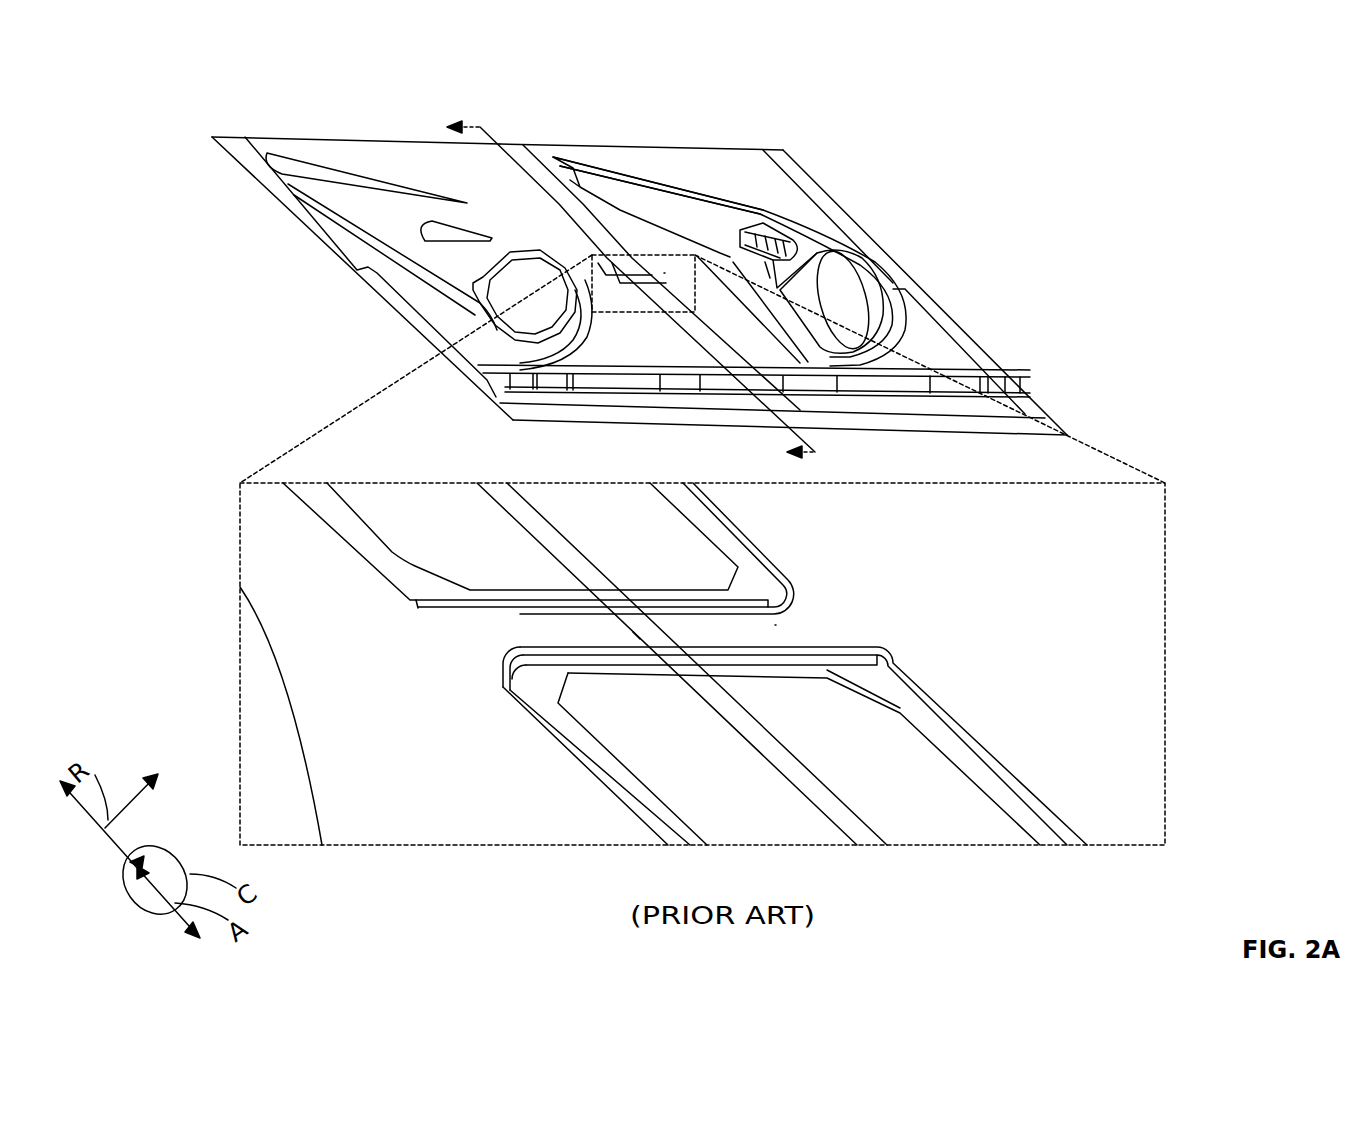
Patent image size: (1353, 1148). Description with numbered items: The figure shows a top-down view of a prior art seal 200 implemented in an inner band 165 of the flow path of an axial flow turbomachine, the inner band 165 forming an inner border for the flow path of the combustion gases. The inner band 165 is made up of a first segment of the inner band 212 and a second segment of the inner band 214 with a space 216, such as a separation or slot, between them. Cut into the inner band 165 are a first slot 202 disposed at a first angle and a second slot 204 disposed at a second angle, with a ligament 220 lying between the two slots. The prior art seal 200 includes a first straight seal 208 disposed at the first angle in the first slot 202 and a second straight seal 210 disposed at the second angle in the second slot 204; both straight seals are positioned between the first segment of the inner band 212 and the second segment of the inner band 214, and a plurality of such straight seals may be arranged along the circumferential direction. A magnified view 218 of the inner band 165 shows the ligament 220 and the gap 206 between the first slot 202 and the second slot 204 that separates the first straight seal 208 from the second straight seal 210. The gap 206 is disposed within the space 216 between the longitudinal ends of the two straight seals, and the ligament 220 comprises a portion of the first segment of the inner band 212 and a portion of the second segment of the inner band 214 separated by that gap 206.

The prior art seal 200 is at (1050, 76).
The inner band 165 is at (590, 98).
The first segment of the inner band 212 is at (384, 140).
The second segment of the inner band 214 is at (692, 147).
The first slot 202 is at (542, 148).
The second slot 204 is at (680, 338).
The gap 206 is at (633, 632).
The first straight seal 208 is at (413, 566).
The second straight seal 210 is at (628, 773).
The space 216 is at (553, 203).
The magnified view 218 is at (628, 255).
The ligament 220 is at (660, 272).